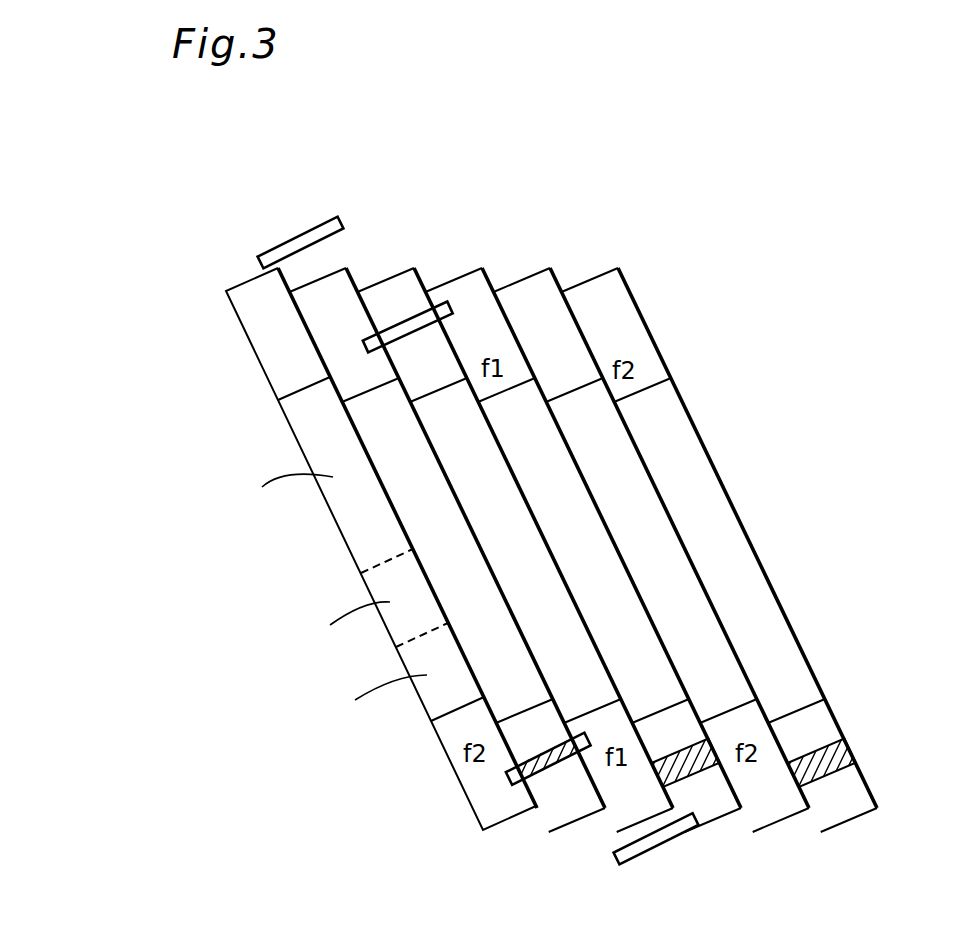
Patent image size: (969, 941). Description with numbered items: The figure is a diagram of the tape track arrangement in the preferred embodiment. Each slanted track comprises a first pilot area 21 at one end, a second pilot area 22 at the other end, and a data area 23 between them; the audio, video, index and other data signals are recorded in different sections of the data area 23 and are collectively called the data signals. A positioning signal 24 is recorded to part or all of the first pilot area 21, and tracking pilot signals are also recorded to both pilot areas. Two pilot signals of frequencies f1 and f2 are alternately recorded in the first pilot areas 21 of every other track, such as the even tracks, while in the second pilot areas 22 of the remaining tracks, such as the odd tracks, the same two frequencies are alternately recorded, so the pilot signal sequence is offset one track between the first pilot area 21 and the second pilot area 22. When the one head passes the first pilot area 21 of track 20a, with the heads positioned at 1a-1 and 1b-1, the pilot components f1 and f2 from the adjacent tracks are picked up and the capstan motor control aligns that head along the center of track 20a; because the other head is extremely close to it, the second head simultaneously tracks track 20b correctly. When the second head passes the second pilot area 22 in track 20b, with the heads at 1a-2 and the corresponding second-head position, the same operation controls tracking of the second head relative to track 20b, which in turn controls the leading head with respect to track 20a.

The track 20a is at (335, 267).
The track 20b is at (377, 284).
The head position 1a-2 is at (296, 240).
The head position 1a-1 is at (515, 785).
The head position 1b-1 is at (657, 848).
The positioning signal 24 is at (560, 772).
The first pilot area 21 is at (478, 828).
The second pilot area 22 is at (268, 396).
The data area 23 is at (418, 714).